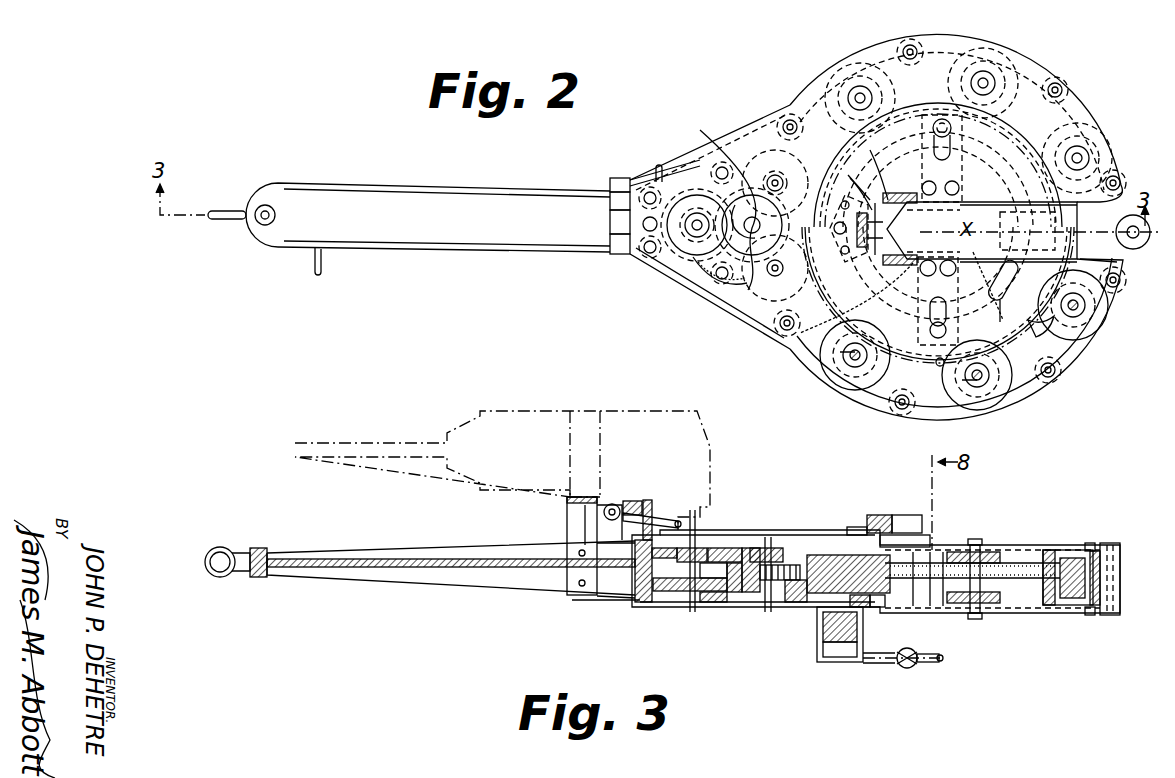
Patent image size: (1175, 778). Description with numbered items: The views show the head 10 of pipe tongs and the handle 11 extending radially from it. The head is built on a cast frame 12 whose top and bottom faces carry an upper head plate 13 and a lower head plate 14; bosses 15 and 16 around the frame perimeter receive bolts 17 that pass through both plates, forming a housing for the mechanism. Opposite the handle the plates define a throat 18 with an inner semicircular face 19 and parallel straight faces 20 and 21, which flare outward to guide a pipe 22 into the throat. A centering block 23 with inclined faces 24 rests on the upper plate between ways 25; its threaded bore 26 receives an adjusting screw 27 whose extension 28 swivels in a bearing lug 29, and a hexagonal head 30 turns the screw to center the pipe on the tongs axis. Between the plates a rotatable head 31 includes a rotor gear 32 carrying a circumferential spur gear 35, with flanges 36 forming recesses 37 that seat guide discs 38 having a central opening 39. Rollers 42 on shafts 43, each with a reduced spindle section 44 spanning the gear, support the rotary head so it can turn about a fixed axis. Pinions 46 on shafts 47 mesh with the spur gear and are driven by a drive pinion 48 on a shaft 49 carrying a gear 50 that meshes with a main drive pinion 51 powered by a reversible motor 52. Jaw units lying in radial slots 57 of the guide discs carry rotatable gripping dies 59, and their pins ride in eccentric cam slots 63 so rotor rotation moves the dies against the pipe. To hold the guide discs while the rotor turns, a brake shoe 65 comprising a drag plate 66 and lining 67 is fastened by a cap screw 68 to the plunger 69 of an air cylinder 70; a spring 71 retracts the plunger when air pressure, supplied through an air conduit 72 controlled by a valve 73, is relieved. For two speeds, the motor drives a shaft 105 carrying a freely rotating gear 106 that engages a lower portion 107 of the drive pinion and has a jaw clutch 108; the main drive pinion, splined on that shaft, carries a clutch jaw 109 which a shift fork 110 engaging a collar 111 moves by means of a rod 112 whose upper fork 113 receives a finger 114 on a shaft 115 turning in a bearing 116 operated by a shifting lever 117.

In FIG. 2, the head 10 is at (990, 408).
In FIG. 3, the handle 11 is at (455, 580).
In FIG. 2, the cast frame 12 is at (1085, 355).
In FIG. 3, the upper head plate 13 is at (1042, 547).
In FIG. 3, the lower head plate 14 is at (1052, 610).
In FIG. 2, the boss 15 is at (1118, 288).
In FIG. 2, the boss 16 is at (1058, 372).
In FIG. 2, the bolts 17 is at (1120, 178).
In FIG. 3, the bolts 17 is at (1112, 545).
In FIG. 2, the throat 18 is at (1082, 246).
In FIG. 2, the inner semicircular face 19 is at (904, 228).
In FIG. 2, the straight face 20 is at (1086, 204).
In FIG. 2, the straight face 21 is at (1072, 260).
In FIG. 2, the pipe 22 is at (1134, 250).
In FIG. 2, the centering block 23 is at (862, 173).
In FIG. 2, the inclined faces 24 is at (922, 258).
In FIG. 2, the ways 25 is at (868, 280).
In FIG. 3, the central threaded bore 26 is at (900, 515).
In FIG. 2, the adjusting screw 27 is at (866, 262).
In FIG. 3, the adjusting screw 27 is at (908, 535).
In FIG. 3, the extension 28 is at (855, 527).
In FIG. 2, the bearing lug 29 is at (856, 176).
In FIG. 3, the bearing lug 29 is at (845, 555).
In FIG. 3, the hexagonal head 30 is at (875, 515).
In FIG. 2, the rotatable head 31 is at (1000, 300).
In FIG. 3, the rotatable head 31 is at (1025, 580).
In FIG. 2, the rotor gear 32 is at (940, 366).
In FIG. 3, the rotor gear 32 is at (1035, 560).
In FIG. 2, the spur gear 35 is at (1038, 334).
In FIG. 3, the circumferential flanges 36 is at (782, 582).
In FIG. 3, the circular recesses 37 is at (1010, 612).
In FIG. 2, the guide discs 38 is at (1002, 324).
In FIG. 3, the guide discs 38 is at (1000, 600).
In FIG. 2, the central circular opening 39 is at (1030, 204).
In FIG. 2, the rollers 42 is at (1082, 305).
In FIG. 3, the rollers 42 is at (1100, 600).
In FIG. 2, the shafts 43 is at (975, 384).
In FIG. 3, the shafts 43 is at (1052, 552).
In FIG. 2, the reduced spindle section 44 is at (698, 262).
In FIG. 2, the pinions 46 is at (787, 292).
In FIG. 2, the shafts 47 is at (774, 278).
In FIG. 3, the shafts 47 is at (766, 602).
In FIG. 2, the drive pinion 48 is at (750, 218).
In FIG. 3, the drive pinion 48 is at (748, 594).
In FIG. 2, the shaft 49 is at (698, 212).
In FIG. 3, the shaft 49 is at (740, 546).
In FIG. 2, the gear 50 is at (738, 287).
In FIG. 3, the gear 50 is at (780, 550).
In FIG. 2, the main drive pinion 51 is at (690, 238).
In FIG. 3, the main drive pinion 51 is at (705, 548).
In FIG. 3, the motor 52 is at (712, 458).
In FIG. 2, the radial slots 57 is at (935, 348).
In FIG. 2, the gripping die 59 is at (912, 272).
In FIG. 2, the eccentric cam slot 63 is at (1020, 298).
In FIG. 2, the brake shoe 65 is at (786, 178).
In FIG. 3, the brake shoe 65 is at (796, 604).
In FIG. 3, the drag plate 66 is at (858, 608).
In FIG. 3, the lining 67 is at (878, 608).
In FIG. 3, the cap screw 68 is at (818, 645).
In FIG. 3, the plunger 69 is at (825, 660).
In FIG. 3, the air cylinder 70 is at (845, 665).
In FIG. 3, the spring 71 is at (866, 662).
In FIG. 3, the air conduit 72 is at (900, 668).
In FIG. 3, the valve 73 is at (915, 668).
In FIG. 3, the shaft 105 is at (642, 600).
In FIG. 3, the gear 106 is at (665, 560).
In FIG. 3, the lower portion 107 is at (718, 604).
In FIG. 3, the jaw clutch 108 is at (705, 595).
In FIG. 3, the clutch jaw 109 is at (640, 595).
In FIG. 3, the shift fork 110 is at (590, 602).
In FIG. 3, the collar 111 is at (697, 545).
In FIG. 2, the rod 112 is at (644, 252).
In FIG. 3, the rod 112 is at (625, 600).
In FIG. 2, the fork 113 is at (648, 226).
In FIG. 3, the fork 113 is at (640, 500).
In FIG. 3, the finger 114 is at (615, 503).
In FIG. 2, the shaft 115 is at (615, 178).
In FIG. 3, the shaft 115 is at (605, 528).
In FIG. 2, the bearing 116 is at (612, 212).
In FIG. 3, the bearing 116 is at (605, 540).
In FIG. 2, the shifting lever 117 is at (656, 176).
In FIG. 3, the shifting lever 117 is at (664, 514).